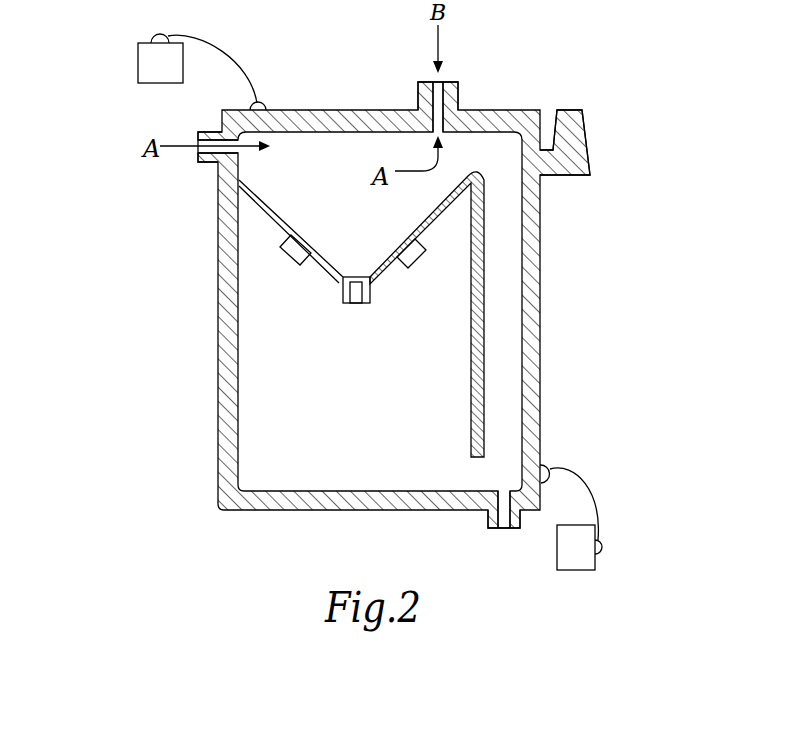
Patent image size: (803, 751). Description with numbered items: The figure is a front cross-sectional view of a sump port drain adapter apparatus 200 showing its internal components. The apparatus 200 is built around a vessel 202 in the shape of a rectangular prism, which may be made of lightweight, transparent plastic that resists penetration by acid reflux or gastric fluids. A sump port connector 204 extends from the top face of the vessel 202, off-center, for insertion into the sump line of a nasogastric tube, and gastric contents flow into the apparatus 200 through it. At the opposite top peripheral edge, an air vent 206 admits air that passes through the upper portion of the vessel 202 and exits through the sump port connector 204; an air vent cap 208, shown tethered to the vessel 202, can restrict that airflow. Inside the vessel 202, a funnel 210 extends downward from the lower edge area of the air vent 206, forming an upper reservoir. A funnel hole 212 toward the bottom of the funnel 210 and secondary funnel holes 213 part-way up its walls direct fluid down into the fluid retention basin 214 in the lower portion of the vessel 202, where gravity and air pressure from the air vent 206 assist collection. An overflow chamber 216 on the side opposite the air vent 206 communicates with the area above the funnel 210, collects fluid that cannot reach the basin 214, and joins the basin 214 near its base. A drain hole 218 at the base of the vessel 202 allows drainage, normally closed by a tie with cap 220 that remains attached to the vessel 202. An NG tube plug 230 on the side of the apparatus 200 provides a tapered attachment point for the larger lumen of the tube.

The sump port drain adapter apparatus 200 is at (505, 52).
The vessel 202 is at (378, 369).
The sump port connector 204 is at (437, 105).
The air vent 206 is at (210, 152).
The air vent cap 208 is at (138, 60).
The funnel 210 is at (275, 215).
The funnel hole 212 is at (356, 294).
The secondary funnel holes 213 is at (285, 258).
The fluid retention basin 214 is at (328, 432).
The overflow chamber 216 is at (506, 343).
The drain hole 218 is at (503, 525).
The tie with cap 220 is at (575, 562).
The NG tube plug 230 is at (574, 126).